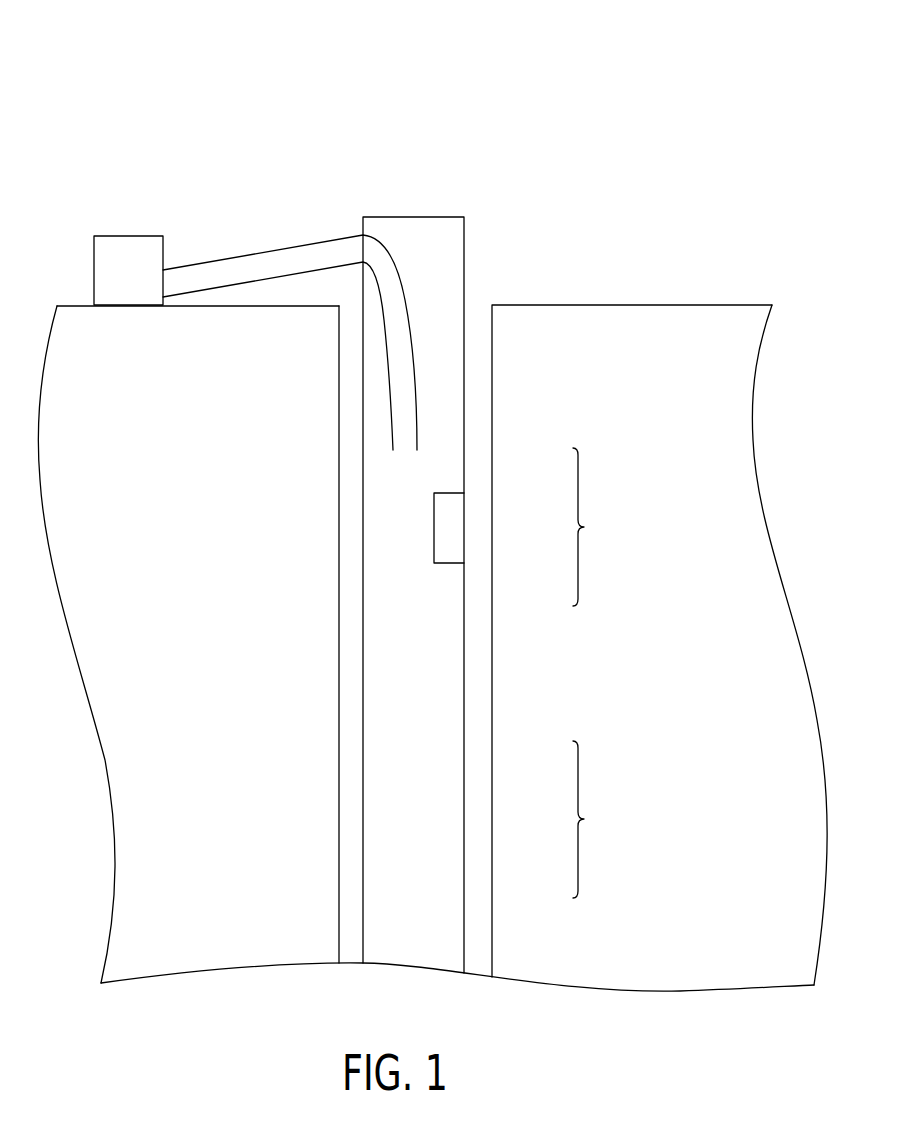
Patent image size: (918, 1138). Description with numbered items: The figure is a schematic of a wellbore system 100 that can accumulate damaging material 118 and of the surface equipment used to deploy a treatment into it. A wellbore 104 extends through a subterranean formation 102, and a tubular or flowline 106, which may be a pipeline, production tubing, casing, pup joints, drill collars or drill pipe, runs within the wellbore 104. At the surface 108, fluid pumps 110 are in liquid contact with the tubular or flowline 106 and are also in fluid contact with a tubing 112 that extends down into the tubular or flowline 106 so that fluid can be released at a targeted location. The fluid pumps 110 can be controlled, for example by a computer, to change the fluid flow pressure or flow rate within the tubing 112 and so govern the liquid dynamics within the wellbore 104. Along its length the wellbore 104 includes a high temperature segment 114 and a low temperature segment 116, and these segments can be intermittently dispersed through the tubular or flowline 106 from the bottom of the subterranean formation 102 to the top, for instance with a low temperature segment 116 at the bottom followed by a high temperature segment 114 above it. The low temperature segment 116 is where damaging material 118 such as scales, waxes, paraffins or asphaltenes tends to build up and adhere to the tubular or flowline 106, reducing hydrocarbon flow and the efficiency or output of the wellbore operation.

The wellbore system 100 is at (158, 113).
The subterranean formation 102 is at (263, 538).
The wellbore 104 is at (339, 775).
The tubular or flowline 106 is at (418, 217).
The surface 108 is at (667, 305).
The fluid pumps 110 is at (142, 286).
The tubing 112 is at (383, 315).
The high temperature segment 114 is at (596, 819).
The low temperature segment 116 is at (596, 527).
The damaging material 118 is at (436, 575).